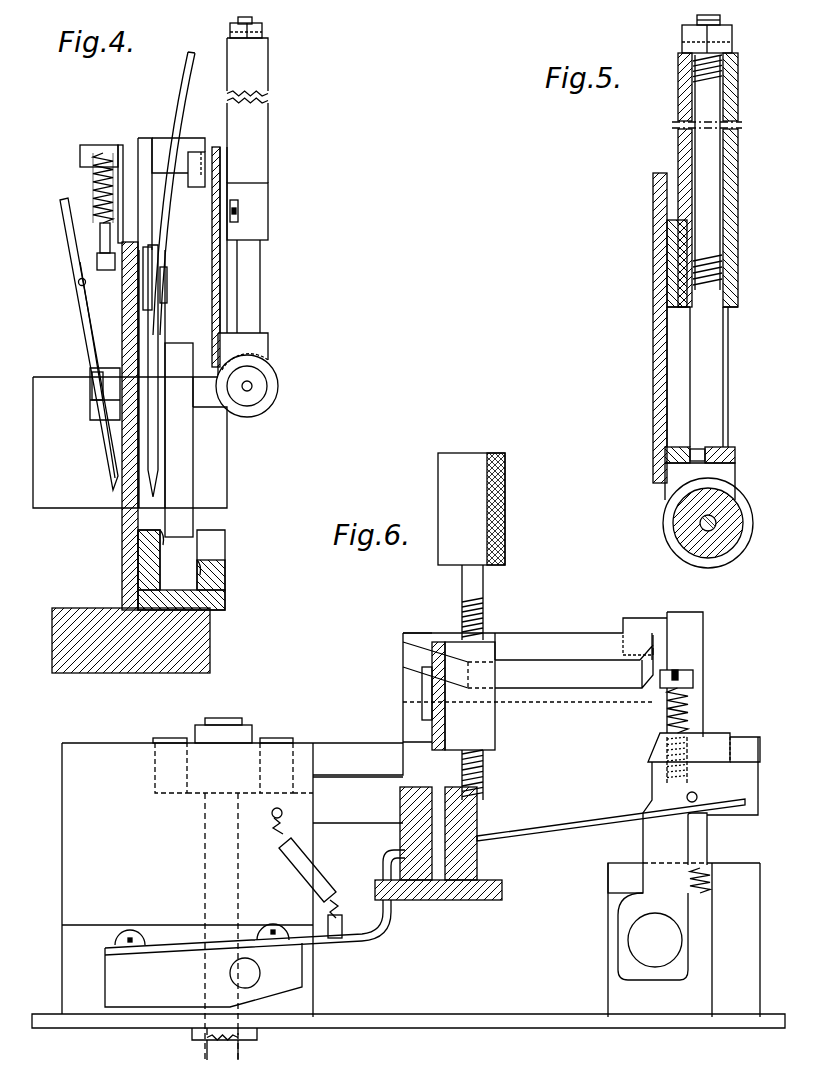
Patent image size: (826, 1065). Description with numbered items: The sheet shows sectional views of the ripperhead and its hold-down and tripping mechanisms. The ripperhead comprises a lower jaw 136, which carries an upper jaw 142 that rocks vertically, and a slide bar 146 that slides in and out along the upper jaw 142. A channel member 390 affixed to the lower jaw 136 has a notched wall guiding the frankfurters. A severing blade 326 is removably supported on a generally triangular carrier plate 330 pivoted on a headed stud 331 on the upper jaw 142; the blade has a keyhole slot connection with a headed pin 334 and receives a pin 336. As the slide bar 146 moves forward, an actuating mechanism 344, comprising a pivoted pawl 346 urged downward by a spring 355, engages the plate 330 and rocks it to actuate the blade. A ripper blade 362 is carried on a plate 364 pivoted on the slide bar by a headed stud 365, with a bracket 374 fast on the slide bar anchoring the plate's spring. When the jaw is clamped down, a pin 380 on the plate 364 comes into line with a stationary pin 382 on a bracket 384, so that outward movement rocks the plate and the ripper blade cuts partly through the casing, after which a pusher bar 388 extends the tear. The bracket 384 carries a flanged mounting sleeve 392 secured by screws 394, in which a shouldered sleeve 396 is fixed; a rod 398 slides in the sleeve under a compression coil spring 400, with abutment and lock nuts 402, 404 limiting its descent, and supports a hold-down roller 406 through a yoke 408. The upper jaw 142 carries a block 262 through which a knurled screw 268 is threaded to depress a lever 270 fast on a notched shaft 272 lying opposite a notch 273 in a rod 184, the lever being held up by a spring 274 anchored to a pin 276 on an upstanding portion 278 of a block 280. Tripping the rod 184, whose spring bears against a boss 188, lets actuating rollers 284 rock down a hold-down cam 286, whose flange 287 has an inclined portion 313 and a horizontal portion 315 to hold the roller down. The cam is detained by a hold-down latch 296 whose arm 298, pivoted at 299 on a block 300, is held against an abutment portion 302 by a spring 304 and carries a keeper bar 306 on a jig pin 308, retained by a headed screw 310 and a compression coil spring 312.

In FIG. 4, the lower jaw 136 is at (132, 558).
In FIG. 4, the upper jaw 142 is at (126, 493).
In FIG. 4, the slide bar 146 is at (130, 320).
In FIG. 6, the slide bar 146 is at (437, 725).
In FIG. 6, the rod 184 is at (210, 902).
In FIG. 6, the boss 188 is at (200, 1033).
In FIG. 6, the block 262 is at (487, 727).
In FIG. 6, the knurled screw 268 is at (476, 585).
In FIG. 6, the lever 270 is at (600, 820).
In FIG. 6, the notched supporting shaft 272 is at (252, 965).
In FIG. 6, the notch 273 is at (230, 965).
In FIG. 6, the spring 274 is at (302, 878).
In FIG. 6, the pin 276 is at (272, 818).
In FIG. 6, the upstanding portion 278 is at (62, 770).
In FIG. 6, the block 280 is at (56, 958).
In FIG. 6, the actuating rollers 284 is at (173, 795).
In FIG. 6, the hold-down cam 286 is at (431, 627).
In FIG. 6, the flange 287 is at (552, 640).
In FIG. 6, the hold-down latch 296 is at (741, 727).
In FIG. 6, the arm 298 is at (683, 843).
In FIG. 6, the pivot 299 is at (643, 935).
In FIG. 6, the block 300 is at (603, 972).
In FIG. 6, the abutment portion 302 is at (617, 873).
In FIG. 6, the spring 304 is at (697, 890).
In FIG. 6, the keeper bar 306 is at (715, 737).
In FIG. 6, the jig pin 308 is at (742, 750).
In FIG. 6, the headed screw 310 is at (662, 678).
In FIG. 6, the compression coil spring 312 is at (668, 710).
In FIG. 6, the inclined portion 313 is at (413, 657).
In FIG. 6, the horizontal portion 315 is at (568, 677).
In FIG. 4, the severing blade 326 is at (72, 253).
In FIG. 4, the carrier plate 330 is at (113, 342).
In FIG. 4, the headed stud 331 is at (98, 412).
In FIG. 4, the headed pin 334 is at (92, 388).
In FIG. 4, the pin 336 is at (79, 283).
In FIG. 4, the actuating mechanism 344 is at (88, 199).
In FIG. 4, the pivoted pawl 346 is at (100, 240).
In FIG. 4, the spring 355 is at (93, 190).
In FIG. 4, the ripper blade 362 is at (183, 88).
In FIG. 4, the plate 364 is at (139, 150).
In FIG. 4, the headed stud 365 is at (152, 255).
In FIG. 4, the bracket 374 is at (88, 146).
In FIG. 4, the pin 380 is at (166, 143).
In FIG. 4, the stationary pin 382 is at (194, 182).
In FIG. 4, the bracket 384 is at (216, 147).
In FIG. 5, the bracket 384 is at (658, 329).
In FIG. 4, the pusher bar 388 is at (183, 472).
In FIG. 4, the channel member 390 is at (212, 588).
In FIG. 4, the flanged mounting sleeve 392 is at (268, 189).
In FIG. 5, the flanged mounting sleeve 392 is at (668, 240).
In FIG. 4, the screws 394 is at (240, 217).
In FIG. 4, the shouldered sleeve 396 is at (262, 112).
In FIG. 5, the shouldered sleeve 396 is at (738, 143).
In FIG. 5, the rod 398 is at (718, 368).
In FIG. 5, the compression coil spring 400 is at (700, 78).
In FIG. 4, the abutment nut 402 is at (264, 30).
In FIG. 5, the abutment nut 402 is at (738, 45).
In FIG. 4, the lock nut 404 is at (232, 27).
In FIG. 5, the lock nut 404 is at (688, 33).
In FIG. 4, the hold-down roller 406 is at (279, 385).
In FIG. 5, the hold-down roller 406 is at (665, 525).
In FIG. 4, the yoke 408 is at (268, 343).
In FIG. 5, the yoke 408 is at (738, 452).